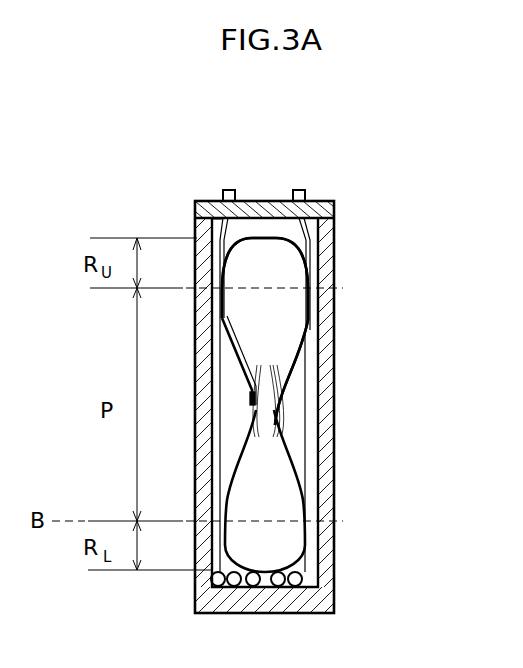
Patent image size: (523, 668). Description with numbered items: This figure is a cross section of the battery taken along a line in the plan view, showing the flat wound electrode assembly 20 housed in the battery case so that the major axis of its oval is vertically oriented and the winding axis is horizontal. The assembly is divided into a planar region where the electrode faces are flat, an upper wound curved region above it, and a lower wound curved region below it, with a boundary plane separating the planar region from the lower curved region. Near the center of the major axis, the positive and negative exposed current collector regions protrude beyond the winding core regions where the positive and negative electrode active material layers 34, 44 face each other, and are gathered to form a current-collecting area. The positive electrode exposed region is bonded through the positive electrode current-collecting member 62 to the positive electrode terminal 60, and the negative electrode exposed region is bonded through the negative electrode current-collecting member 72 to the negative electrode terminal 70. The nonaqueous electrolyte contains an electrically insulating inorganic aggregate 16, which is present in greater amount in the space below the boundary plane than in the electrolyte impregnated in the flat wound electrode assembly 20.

The negative electrode terminal 70 is at (229, 189).
The positive electrode terminal 60 is at (299, 189).
The negative electrode current-collecting member 72 is at (203, 250).
The positive electrode current-collecting member 62 is at (307, 262).
The positive electrode active material layer 34 is at (298, 372).
The negative electrode active material layer 44 is at (265, 331).
The flat wound electrode assembly 20 is at (297, 486).
The inorganic aggregate 16 is at (214, 582).